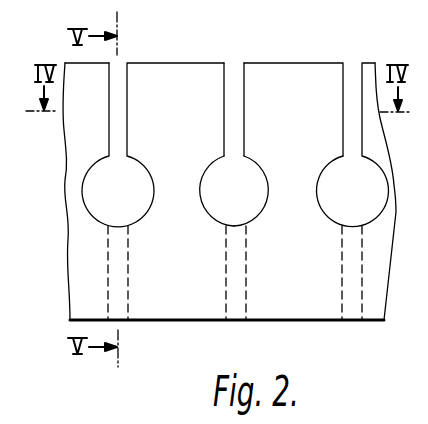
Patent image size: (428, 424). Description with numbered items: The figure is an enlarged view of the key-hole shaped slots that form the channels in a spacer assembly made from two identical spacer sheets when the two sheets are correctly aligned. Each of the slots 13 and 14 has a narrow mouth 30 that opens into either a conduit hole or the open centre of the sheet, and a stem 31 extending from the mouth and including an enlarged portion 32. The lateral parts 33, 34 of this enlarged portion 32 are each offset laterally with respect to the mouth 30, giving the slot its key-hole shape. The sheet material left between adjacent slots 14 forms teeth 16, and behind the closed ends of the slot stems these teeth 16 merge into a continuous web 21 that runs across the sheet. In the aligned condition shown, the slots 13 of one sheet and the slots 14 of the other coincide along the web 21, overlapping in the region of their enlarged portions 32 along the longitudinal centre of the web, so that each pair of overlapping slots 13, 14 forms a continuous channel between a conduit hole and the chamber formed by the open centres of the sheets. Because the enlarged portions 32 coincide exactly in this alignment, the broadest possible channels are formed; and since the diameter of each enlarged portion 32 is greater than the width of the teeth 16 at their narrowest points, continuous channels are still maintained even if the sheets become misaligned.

The slots 13 is at (237, 320).
The slots 14 is at (246, 93).
The teeth 16 is at (293, 91).
The continuous web 21 is at (178, 296).
The narrow mouth 30 is at (237, 145).
The stem 31 is at (230, 117).
The enlarged portion 32 is at (238, 185).
The lateral part 33 is at (222, 211).
The lateral part 34 is at (255, 204).